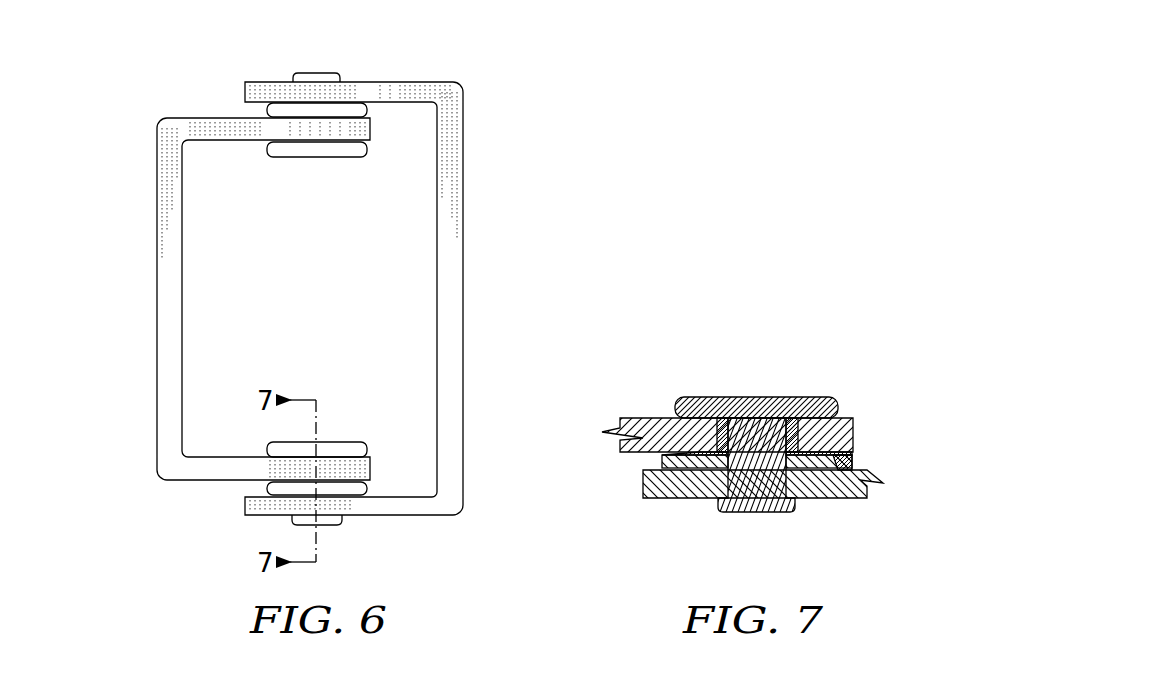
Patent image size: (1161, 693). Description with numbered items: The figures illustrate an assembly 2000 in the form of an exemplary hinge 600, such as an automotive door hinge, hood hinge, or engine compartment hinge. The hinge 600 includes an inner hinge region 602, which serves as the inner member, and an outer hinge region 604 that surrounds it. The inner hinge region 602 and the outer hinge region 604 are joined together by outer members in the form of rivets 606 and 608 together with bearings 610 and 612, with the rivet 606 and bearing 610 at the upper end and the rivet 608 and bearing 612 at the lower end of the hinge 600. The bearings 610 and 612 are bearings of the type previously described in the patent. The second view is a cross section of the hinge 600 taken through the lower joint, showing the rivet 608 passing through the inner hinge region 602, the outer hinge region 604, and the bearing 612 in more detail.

In FIG. 6, the assembly 2000 is at (474, 61).
In FIG. 7, the assembly 2000 is at (846, 358).
In FIG. 6, the hinge 600 is at (476, 152).
In FIG. 7, the hinge 600 is at (893, 401).
In FIG. 6, the inner hinge region 602 is at (157, 215).
In FIG. 7, the inner hinge region 602 is at (650, 418).
In FIG. 6, the outer hinge region 604 is at (463, 275).
In FIG. 7, the outer hinge region 604 is at (865, 470).
In FIG. 6, the rivet 606 is at (315, 73).
In FIG. 6, the rivet 608 is at (292, 521).
In FIG. 7, the rivet 608 is at (735, 512).
In FIG. 6, the bearing 610 is at (267, 108).
In FIG. 6, the bearing 612 is at (268, 488).
In FIG. 7, the bearing 612 is at (663, 462).